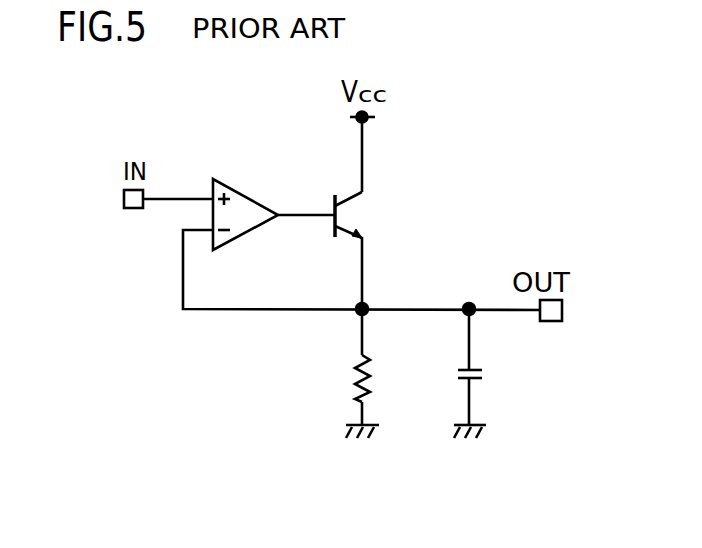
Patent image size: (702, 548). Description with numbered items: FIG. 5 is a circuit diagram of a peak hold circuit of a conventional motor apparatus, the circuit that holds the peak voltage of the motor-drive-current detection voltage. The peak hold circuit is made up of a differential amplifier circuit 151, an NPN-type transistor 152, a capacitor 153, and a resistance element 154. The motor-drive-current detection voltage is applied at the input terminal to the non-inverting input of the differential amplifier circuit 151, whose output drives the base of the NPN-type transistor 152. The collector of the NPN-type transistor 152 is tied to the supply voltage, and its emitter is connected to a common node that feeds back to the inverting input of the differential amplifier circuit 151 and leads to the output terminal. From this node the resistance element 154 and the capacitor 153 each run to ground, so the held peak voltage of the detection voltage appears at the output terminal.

The differential amplifier circuit 151 is at (259, 190).
The NPN-type transistor 152 is at (350, 217).
The capacitor 153 is at (490, 377).
The resistance element 154 is at (347, 371).